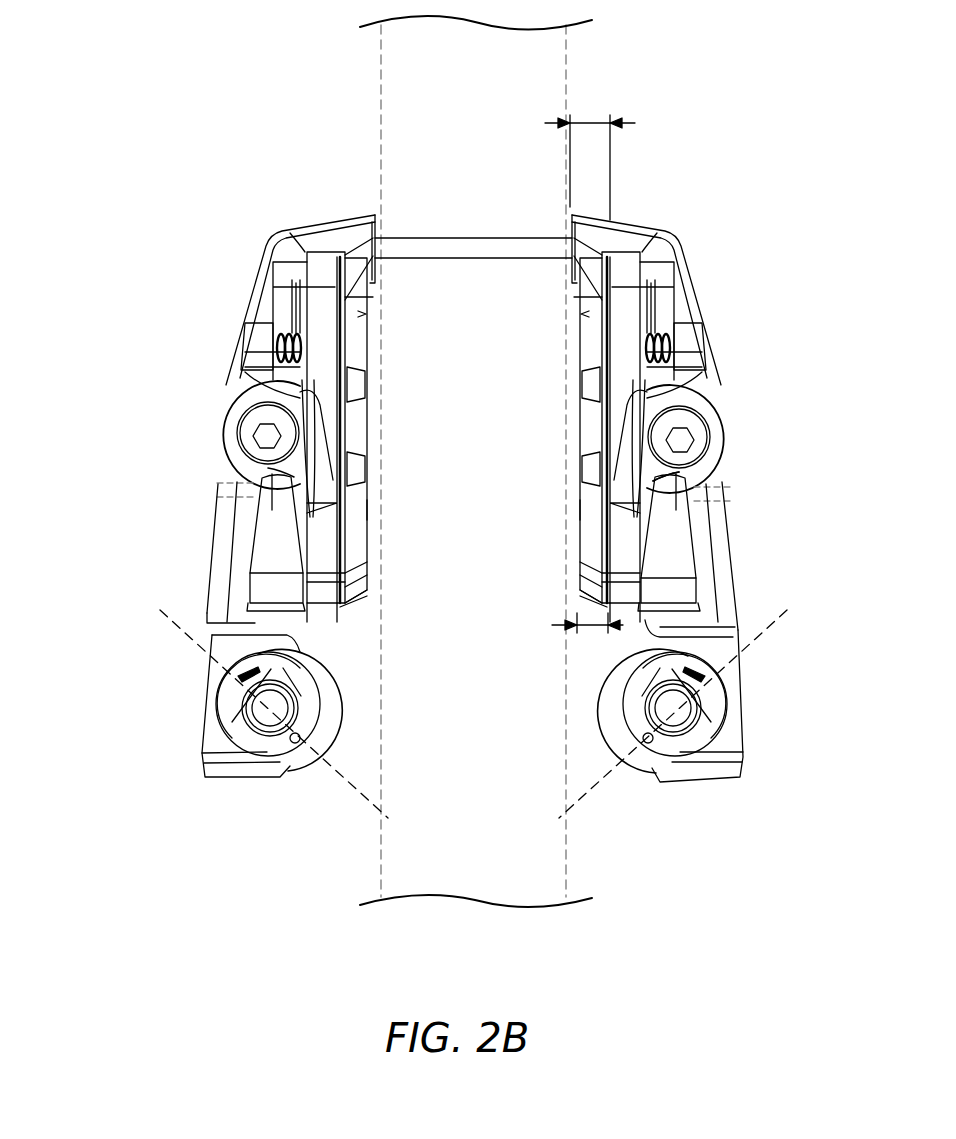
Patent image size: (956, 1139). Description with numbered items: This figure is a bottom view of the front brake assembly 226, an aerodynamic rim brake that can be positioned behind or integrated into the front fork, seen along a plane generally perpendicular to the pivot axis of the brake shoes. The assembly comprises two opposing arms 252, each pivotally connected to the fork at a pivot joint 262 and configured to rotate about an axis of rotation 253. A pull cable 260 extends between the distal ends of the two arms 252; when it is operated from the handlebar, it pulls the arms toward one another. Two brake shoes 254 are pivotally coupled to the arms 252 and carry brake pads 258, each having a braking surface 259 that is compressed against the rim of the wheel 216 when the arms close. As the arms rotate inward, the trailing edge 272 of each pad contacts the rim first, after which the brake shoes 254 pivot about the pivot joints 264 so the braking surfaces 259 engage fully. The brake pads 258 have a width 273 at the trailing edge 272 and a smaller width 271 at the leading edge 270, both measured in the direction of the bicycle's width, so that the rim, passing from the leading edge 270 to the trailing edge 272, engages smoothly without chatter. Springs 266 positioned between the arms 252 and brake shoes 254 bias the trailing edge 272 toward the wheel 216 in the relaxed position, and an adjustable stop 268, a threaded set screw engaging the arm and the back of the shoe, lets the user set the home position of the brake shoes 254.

The front brake assembly 226 is at (217, 113).
The wheel 216 is at (422, 857).
The arms 252 is at (686, 333).
The axis of rotation 253 is at (576, 795).
The brake shoes 254 is at (625, 300).
The brake pads 258 is at (582, 440).
The braking surface 259 is at (578, 512).
The pull cable 260 is at (466, 240).
The pivot joint 262 is at (647, 708).
The pivot joints 264 is at (696, 438).
The springs 266 is at (672, 352).
The adjustable stop 268 is at (729, 492).
The leading edge 270 is at (577, 593).
The width 271 is at (586, 634).
The trailing edge 272 is at (604, 229).
The width 273 is at (587, 120).